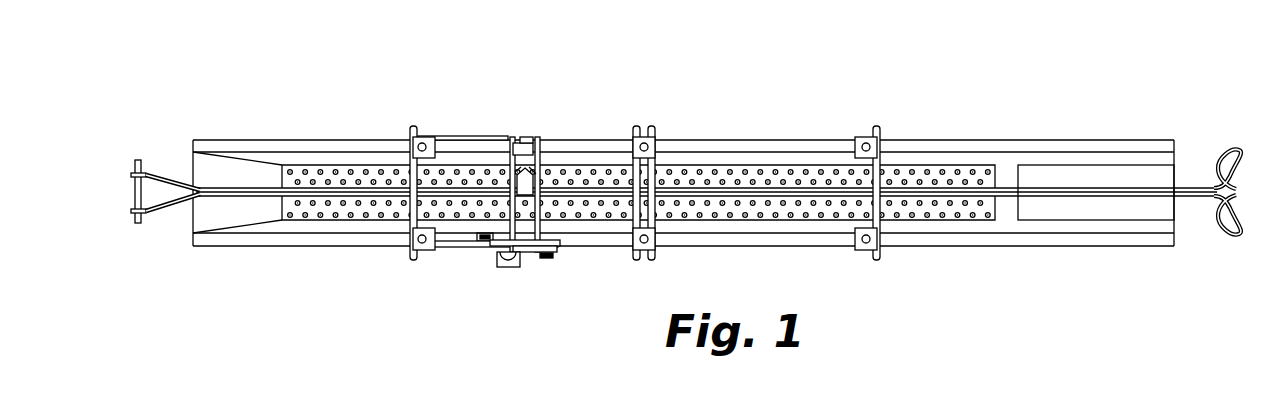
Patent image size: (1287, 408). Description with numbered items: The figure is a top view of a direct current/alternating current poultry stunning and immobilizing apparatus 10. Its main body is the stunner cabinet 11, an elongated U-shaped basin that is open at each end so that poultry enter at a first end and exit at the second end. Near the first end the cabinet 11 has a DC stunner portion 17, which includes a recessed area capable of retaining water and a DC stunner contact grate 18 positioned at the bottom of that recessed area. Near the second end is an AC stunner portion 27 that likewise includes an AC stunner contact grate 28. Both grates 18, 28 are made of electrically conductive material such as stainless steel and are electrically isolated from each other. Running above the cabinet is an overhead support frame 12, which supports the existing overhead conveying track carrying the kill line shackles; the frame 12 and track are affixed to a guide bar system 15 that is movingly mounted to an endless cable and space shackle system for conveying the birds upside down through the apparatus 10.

The poultry stunning and immobilizing apparatus 10 is at (998, 67).
The stunner cabinet 11 is at (1054, 266).
The overhead support frame 12 is at (783, 118).
The guide bar system 15 is at (1233, 200).
The DC stunner portion 17 is at (413, 96).
The DC stunner contact grate 18 is at (465, 227).
The AC stunner portion 27 is at (1149, 114).
The AC stunner contact grate 28 is at (1078, 158).